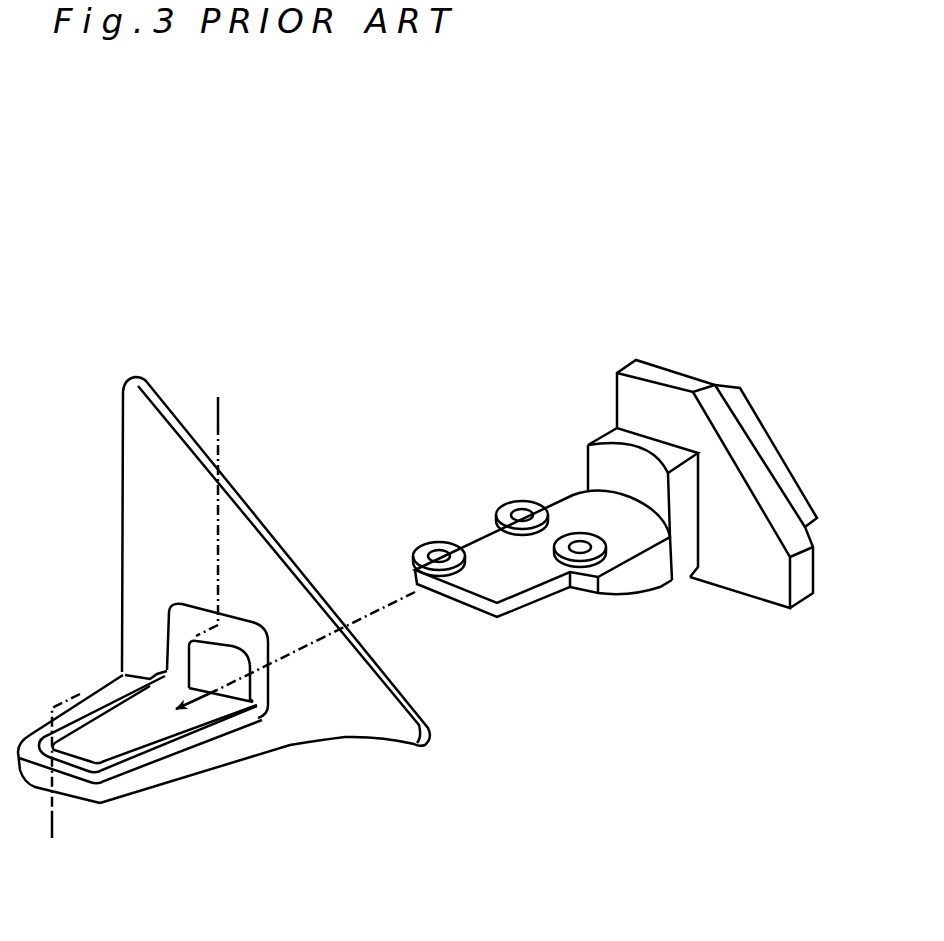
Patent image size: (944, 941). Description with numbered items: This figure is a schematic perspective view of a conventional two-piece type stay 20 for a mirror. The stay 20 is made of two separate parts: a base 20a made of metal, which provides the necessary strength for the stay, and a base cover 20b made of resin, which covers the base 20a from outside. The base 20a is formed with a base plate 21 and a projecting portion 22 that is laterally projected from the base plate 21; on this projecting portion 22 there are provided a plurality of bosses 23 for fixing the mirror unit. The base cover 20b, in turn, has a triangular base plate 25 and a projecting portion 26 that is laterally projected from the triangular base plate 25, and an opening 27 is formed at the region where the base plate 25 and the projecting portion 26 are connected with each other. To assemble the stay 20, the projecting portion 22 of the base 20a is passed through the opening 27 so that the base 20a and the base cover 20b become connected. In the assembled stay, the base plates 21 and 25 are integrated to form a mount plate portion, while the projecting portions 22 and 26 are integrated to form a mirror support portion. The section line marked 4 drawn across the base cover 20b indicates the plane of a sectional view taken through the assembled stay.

The stay 20 is at (323, 233).
The base 20a is at (615, 358).
The base cover 20b is at (178, 378).
The base plate 21 is at (715, 383).
The projecting portion 22 is at (643, 575).
The bosses 23 is at (577, 530).
The triangular base plate 25 is at (155, 458).
The projecting portion 26 is at (196, 756).
The opening 27 is at (238, 650).
The section line 4- 4 is at (222, 414).